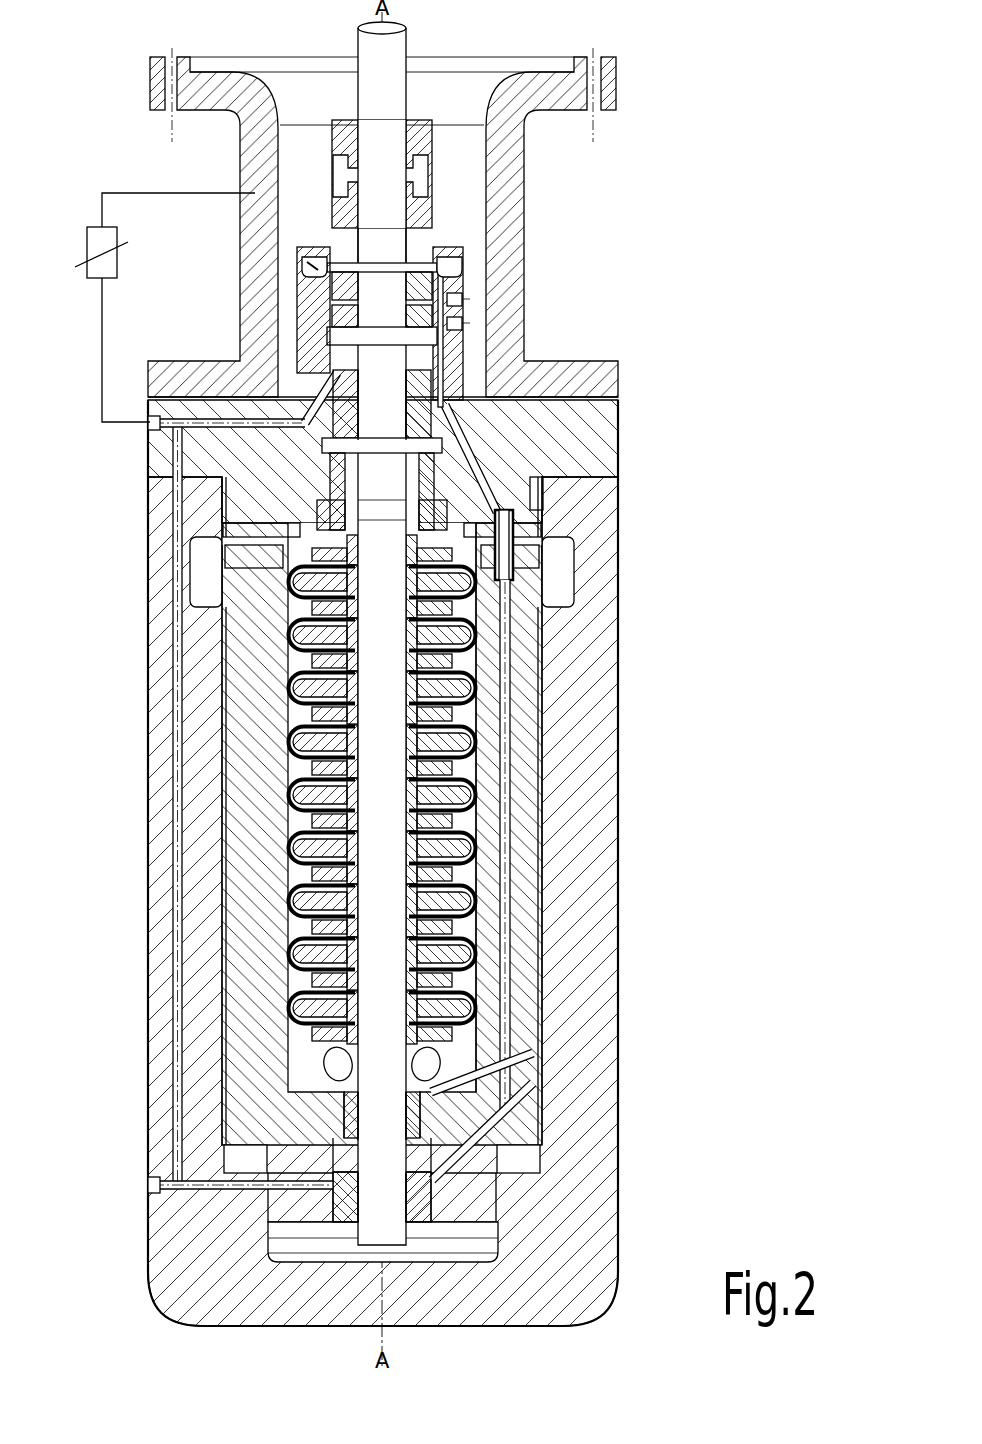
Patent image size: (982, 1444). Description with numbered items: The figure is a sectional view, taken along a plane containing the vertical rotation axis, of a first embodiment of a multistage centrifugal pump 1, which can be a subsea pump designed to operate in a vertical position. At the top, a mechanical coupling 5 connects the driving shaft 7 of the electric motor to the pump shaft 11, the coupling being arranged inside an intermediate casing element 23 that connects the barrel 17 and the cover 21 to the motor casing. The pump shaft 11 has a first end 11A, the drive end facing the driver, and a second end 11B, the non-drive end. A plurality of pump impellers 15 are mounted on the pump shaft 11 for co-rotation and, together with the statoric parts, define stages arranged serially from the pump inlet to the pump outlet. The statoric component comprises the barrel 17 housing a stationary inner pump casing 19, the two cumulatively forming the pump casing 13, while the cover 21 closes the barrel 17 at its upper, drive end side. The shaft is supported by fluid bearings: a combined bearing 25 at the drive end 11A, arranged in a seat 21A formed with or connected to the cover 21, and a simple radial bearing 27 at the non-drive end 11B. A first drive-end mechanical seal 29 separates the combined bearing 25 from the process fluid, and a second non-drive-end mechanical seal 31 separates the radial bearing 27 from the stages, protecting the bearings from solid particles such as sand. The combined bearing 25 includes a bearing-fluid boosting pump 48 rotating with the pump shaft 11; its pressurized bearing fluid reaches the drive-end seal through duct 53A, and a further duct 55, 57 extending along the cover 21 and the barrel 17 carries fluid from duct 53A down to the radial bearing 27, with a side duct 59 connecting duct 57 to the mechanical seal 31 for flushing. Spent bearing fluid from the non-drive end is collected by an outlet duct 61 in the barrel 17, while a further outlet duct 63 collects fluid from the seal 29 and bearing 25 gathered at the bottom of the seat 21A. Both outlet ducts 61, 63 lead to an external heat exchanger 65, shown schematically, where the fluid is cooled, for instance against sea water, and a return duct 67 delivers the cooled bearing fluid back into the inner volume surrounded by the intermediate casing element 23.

The multistage centrifugal pump 1 is at (676, 416).
The mechanical coupling 5 is at (440, 183).
The driving shaft 7 is at (394, 60).
The pump shaft 11 is at (372, 432).
The first end 11A is at (394, 239).
The second end 11B is at (392, 1202).
The pump casing 13 is at (618, 913).
The pump impellers 15 is at (458, 860).
The barrel 17 is at (592, 782).
The inner pump casing 19 is at (560, 1002).
The cover 21 is at (604, 468).
The seat 21A is at (293, 278).
The intermediate casing element 23 is at (518, 218).
The combined bearing 25 is at (474, 279).
The radial bearing 27 is at (345, 1207).
The drive-end mechanical seal 29 is at (352, 388).
The non-drive-end mechanical seal 31 is at (420, 1117).
The bearing-fluid boosting pump 48 is at (309, 250).
The duct 53A is at (446, 386).
The further duct 55 is at (482, 464).
The further duct 57 is at (508, 724).
The side duct 59 is at (490, 1066).
The outlet duct 61 is at (185, 893).
The further outlet duct 63 is at (238, 424).
The external heat exchanger 65 is at (95, 283).
The return duct 67 is at (128, 193).